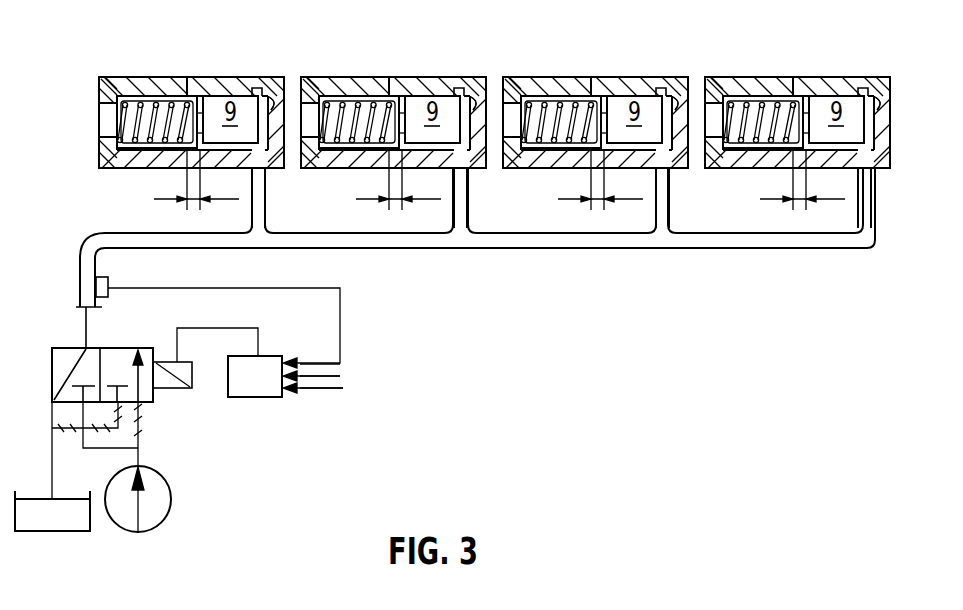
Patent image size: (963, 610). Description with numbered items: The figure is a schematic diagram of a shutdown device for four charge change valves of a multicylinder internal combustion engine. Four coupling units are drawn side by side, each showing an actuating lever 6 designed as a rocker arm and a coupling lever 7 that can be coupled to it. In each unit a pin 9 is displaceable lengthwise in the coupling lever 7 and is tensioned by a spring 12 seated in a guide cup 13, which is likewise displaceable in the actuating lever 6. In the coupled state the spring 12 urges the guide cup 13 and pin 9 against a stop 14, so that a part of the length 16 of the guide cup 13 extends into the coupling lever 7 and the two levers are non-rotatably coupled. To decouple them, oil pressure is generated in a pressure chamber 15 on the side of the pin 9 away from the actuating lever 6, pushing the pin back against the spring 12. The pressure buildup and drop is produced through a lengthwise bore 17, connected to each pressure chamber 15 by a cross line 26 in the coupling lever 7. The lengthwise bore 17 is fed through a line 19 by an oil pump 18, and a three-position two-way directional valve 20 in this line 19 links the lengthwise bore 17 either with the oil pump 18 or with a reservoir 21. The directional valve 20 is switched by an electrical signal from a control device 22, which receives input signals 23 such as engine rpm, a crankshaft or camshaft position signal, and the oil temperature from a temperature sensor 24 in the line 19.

The actuating lever 6 is at (153, 84).
The coupling lever 7 is at (207, 84).
The pin 9 is at (533, 119).
The spring 12 is at (118, 112).
The guide cup 13 is at (129, 101).
The stop 14 is at (265, 88).
The pressure chamber 15 is at (268, 93).
The length 16 is at (481, 183).
The lengthwise bore 17 is at (568, 240).
The oil pump 18 is at (157, 505).
The line 19 is at (84, 262).
The 3/2-way valve 20 is at (67, 363).
The reservoir 21 is at (73, 522).
The control device 22 is at (252, 385).
The input signals 23 is at (327, 365).
The temperature sensor 24 is at (110, 287).
The cross line 26 is at (258, 213).